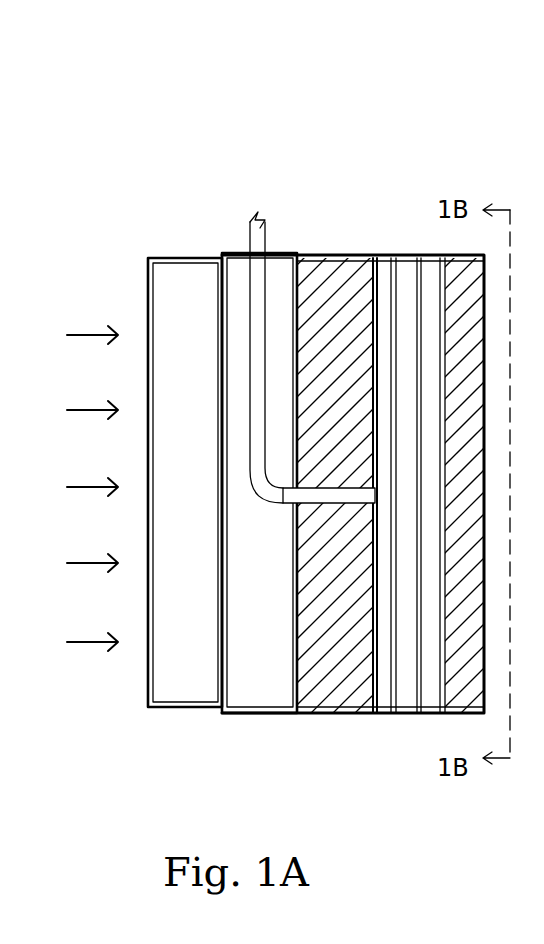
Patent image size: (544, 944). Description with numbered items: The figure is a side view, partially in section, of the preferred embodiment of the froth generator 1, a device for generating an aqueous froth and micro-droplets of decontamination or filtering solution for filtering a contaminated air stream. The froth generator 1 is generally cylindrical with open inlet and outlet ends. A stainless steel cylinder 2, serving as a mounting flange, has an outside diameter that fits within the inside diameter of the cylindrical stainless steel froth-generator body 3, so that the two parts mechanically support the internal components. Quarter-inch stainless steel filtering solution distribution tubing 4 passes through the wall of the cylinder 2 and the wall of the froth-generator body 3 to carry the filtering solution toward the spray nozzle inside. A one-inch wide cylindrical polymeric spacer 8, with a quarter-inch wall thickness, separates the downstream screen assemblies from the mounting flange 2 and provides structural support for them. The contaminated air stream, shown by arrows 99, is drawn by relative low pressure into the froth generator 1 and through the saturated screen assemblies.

The froth generator 1 is at (406, 97).
The stainless steel cylinder 2 is at (183, 708).
The froth-generator body 3 is at (467, 254).
The filtering solution distribution tubing 4 is at (262, 300).
The cylindrical polymeric spacer 8 is at (325, 690).
The contaminated air stream 99 is at (88, 333).